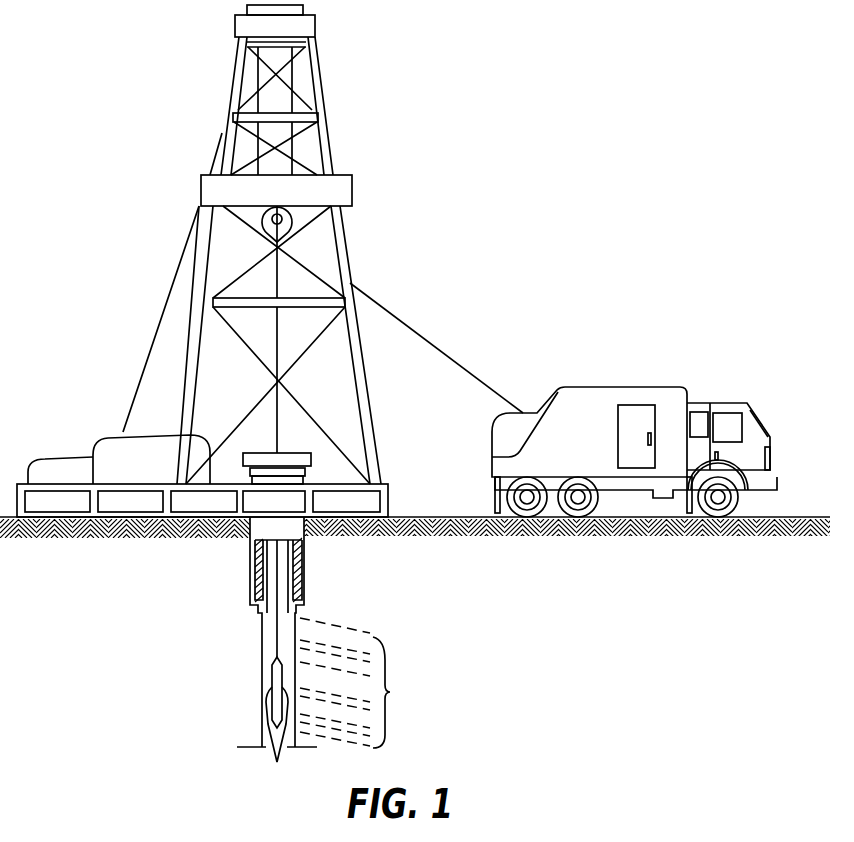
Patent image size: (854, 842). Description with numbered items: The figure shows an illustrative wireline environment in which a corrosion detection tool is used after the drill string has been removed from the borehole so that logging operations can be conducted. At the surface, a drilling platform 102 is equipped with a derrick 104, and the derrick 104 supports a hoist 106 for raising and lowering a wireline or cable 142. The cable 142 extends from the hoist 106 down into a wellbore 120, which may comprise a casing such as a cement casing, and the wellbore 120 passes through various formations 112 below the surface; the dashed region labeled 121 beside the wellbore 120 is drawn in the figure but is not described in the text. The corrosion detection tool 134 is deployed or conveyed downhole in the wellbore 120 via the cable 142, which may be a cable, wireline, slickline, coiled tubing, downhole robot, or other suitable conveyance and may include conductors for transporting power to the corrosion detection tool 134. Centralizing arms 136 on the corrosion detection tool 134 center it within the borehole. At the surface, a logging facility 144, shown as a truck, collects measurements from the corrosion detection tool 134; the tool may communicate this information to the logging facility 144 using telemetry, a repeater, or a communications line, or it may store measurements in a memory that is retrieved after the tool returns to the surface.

The drilling platform 102 is at (392, 497).
The derrick 104 is at (375, 438).
The hoist 106 is at (283, 229).
The formations 112 is at (291, 452).
The wellbore 120 is at (262, 630).
The subterranean formation 121 is at (372, 683).
The corrosion detection tool 134 is at (277, 680).
The centralizing arms 136 is at (265, 702).
The cable 142 is at (443, 352).
The logging facility 144 is at (605, 387).